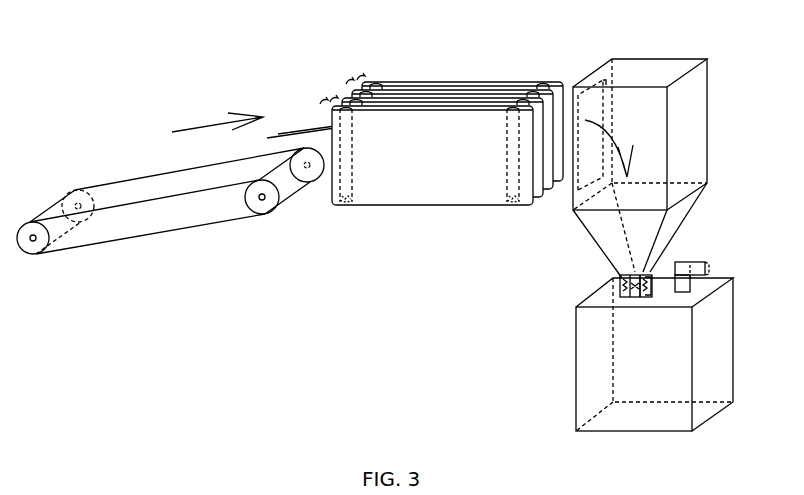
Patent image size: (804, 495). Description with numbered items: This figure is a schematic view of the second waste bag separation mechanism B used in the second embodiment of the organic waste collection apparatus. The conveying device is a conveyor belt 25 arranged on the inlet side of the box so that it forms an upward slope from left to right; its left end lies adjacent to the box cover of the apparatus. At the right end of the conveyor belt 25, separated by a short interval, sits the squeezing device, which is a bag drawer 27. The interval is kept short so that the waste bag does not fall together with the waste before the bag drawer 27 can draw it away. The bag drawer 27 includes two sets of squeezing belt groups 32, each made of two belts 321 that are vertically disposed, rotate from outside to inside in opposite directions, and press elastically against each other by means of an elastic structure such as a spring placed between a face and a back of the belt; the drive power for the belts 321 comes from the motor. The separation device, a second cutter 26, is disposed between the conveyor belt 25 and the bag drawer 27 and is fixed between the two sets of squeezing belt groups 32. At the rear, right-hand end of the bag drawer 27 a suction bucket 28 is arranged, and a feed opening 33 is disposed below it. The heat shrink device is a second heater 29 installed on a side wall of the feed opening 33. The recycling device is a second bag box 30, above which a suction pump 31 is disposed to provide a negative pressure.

The conveyor belt 25 is at (170, 129).
The second cutter 26 is at (327, 71).
The bag drawer 27 is at (441, 105).
The squeezing belt groups 32 is at (348, 56).
The belts 321 is at (462, 93).
The suction bucket 28 is at (640, 141).
The second heater 29 is at (566, 269).
The second bag box 30 is at (606, 354).
The suction pump 31 is at (720, 243).
The feed opening 33 is at (682, 250).
The second waste bag separation mechanism B is at (325, 297).